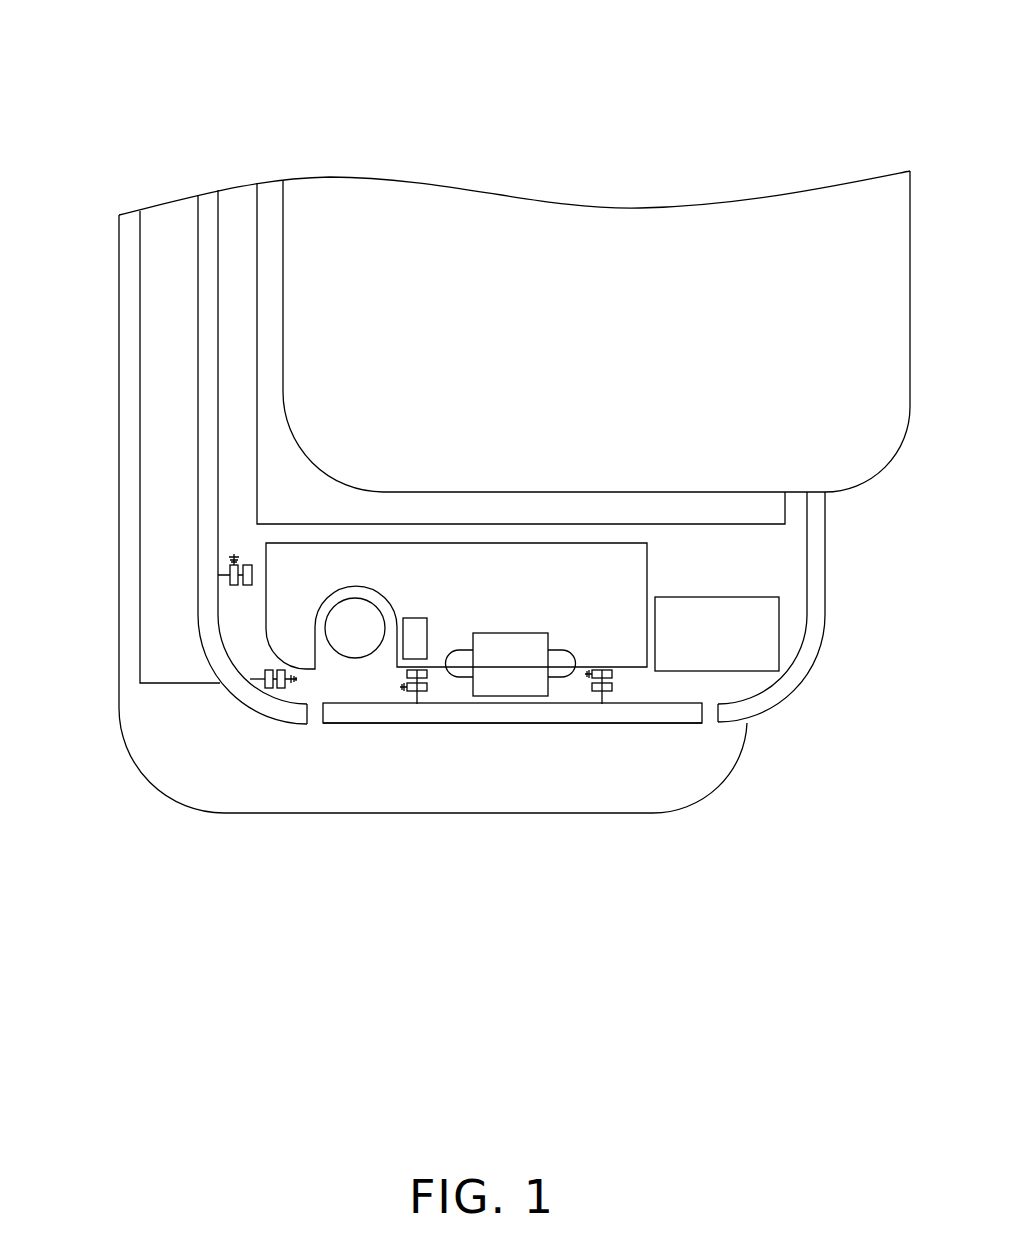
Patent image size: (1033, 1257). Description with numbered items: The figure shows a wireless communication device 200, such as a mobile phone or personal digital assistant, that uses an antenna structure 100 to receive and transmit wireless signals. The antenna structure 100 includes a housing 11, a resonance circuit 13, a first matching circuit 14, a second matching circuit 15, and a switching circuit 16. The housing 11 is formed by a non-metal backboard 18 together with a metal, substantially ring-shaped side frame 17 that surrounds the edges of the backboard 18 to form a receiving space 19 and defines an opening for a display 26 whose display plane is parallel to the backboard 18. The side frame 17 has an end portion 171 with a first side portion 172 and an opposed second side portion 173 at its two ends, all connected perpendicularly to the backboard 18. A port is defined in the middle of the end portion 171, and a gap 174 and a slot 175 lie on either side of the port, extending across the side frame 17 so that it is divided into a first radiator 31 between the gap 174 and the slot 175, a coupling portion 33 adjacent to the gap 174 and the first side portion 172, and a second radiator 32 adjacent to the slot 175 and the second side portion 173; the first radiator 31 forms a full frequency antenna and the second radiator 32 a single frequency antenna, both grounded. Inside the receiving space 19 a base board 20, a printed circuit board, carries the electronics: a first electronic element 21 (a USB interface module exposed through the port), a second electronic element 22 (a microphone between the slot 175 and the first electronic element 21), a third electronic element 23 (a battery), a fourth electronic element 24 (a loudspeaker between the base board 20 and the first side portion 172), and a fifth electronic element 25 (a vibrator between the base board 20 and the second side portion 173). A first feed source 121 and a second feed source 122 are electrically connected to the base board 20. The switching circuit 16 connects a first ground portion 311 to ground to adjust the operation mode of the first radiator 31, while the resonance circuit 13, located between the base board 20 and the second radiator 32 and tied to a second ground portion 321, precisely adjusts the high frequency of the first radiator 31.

The wireless communication device 200 is at (470, 57).
The antenna structure 100 is at (160, 314).
The housing 11 is at (483, 467).
The resonance circuit 13 is at (240, 793).
The first matching circuit 14 is at (417, 793).
The second matching circuit 15 is at (142, 586).
The switching circuit 16 is at (595, 625).
The side frame 17 is at (472, 476).
The backboard 18 is at (887, 438).
The receiving space 19 is at (796, 586).
The base board 20 is at (630, 565).
The first electronic element 21 is at (512, 648).
The second electronic element 22 is at (415, 635).
The third electronic element 23 is at (285, 452).
The fourth electronic element 24 is at (730, 623).
The fifth electronic element 25 is at (357, 615).
The display 26 is at (637, 785).
The first radiator 31 is at (512, 803).
The second radiator 32 is at (230, 683).
The coupling portion 33 is at (760, 710).
The first feed source 121 is at (409, 692).
The second feed source 122 is at (230, 574).
The end portion 171 is at (571, 736).
The first side portion 172 is at (829, 692).
The second side portion 173 is at (195, 664).
The gap 174 is at (711, 731).
The slot 175 is at (320, 727).
The first ground portion 311 is at (615, 687).
The second ground portion 321 is at (267, 687).